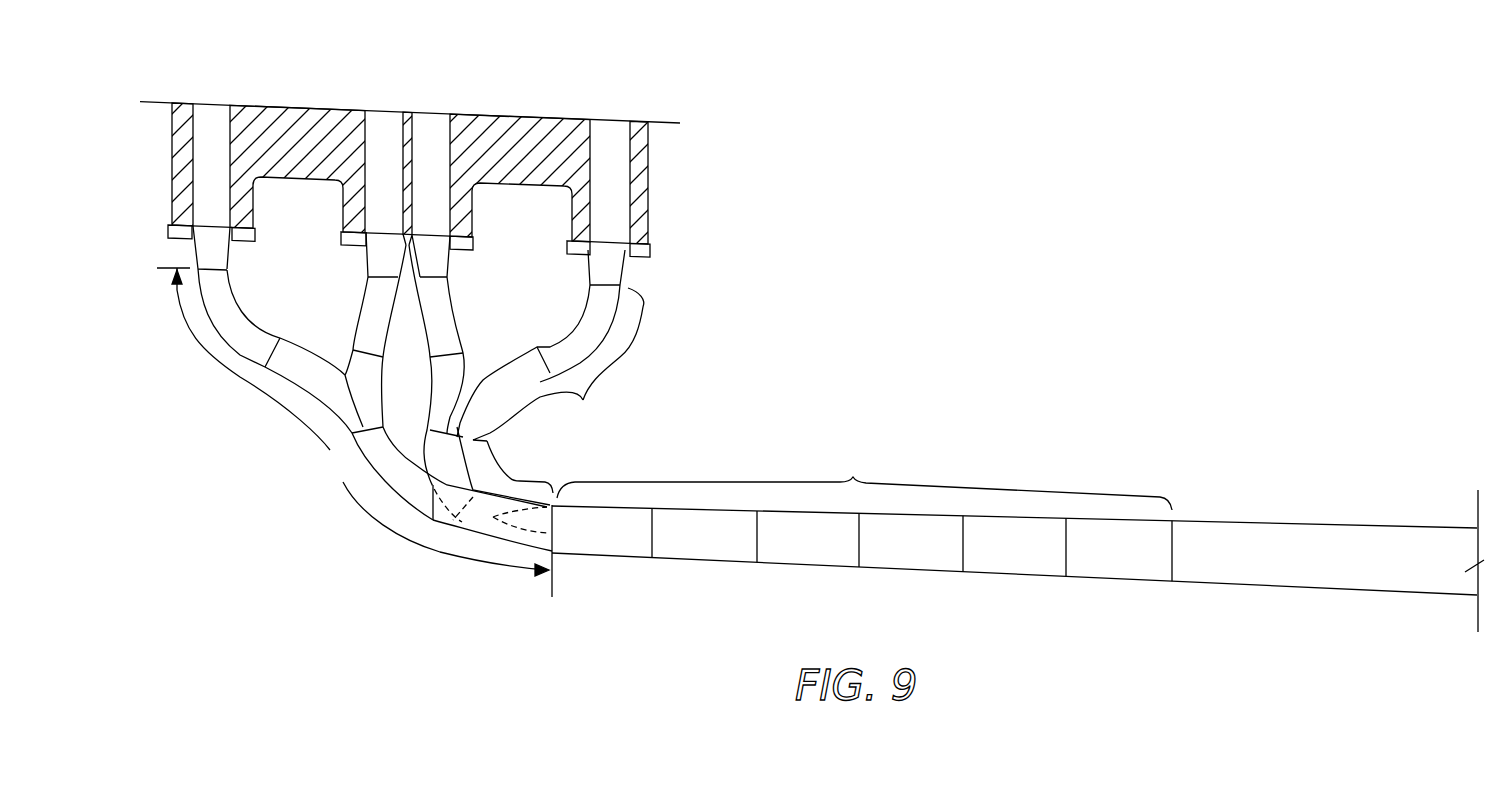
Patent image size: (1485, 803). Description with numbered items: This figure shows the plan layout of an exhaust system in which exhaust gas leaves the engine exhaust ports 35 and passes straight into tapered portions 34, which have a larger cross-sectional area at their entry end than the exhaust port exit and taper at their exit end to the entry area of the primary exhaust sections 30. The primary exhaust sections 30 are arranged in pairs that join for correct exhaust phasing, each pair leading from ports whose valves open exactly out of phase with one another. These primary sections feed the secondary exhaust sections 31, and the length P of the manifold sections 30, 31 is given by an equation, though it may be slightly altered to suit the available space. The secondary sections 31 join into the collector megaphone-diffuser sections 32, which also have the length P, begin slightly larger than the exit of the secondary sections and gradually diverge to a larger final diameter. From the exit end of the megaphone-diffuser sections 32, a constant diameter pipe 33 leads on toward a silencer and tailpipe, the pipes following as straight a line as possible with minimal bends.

The primary exhaust section 30 is at (583, 400).
The secondary exhaust section 31 is at (510, 475).
The collector megaphone-diffuser section 32 is at (853, 477).
The constant diameter pipe 33 is at (1280, 540).
The tapered portion 34 is at (217, 253).
The engine exhaust port 35 is at (207, 125).
The length of the exhaust manifold sections P is at (303, 513).